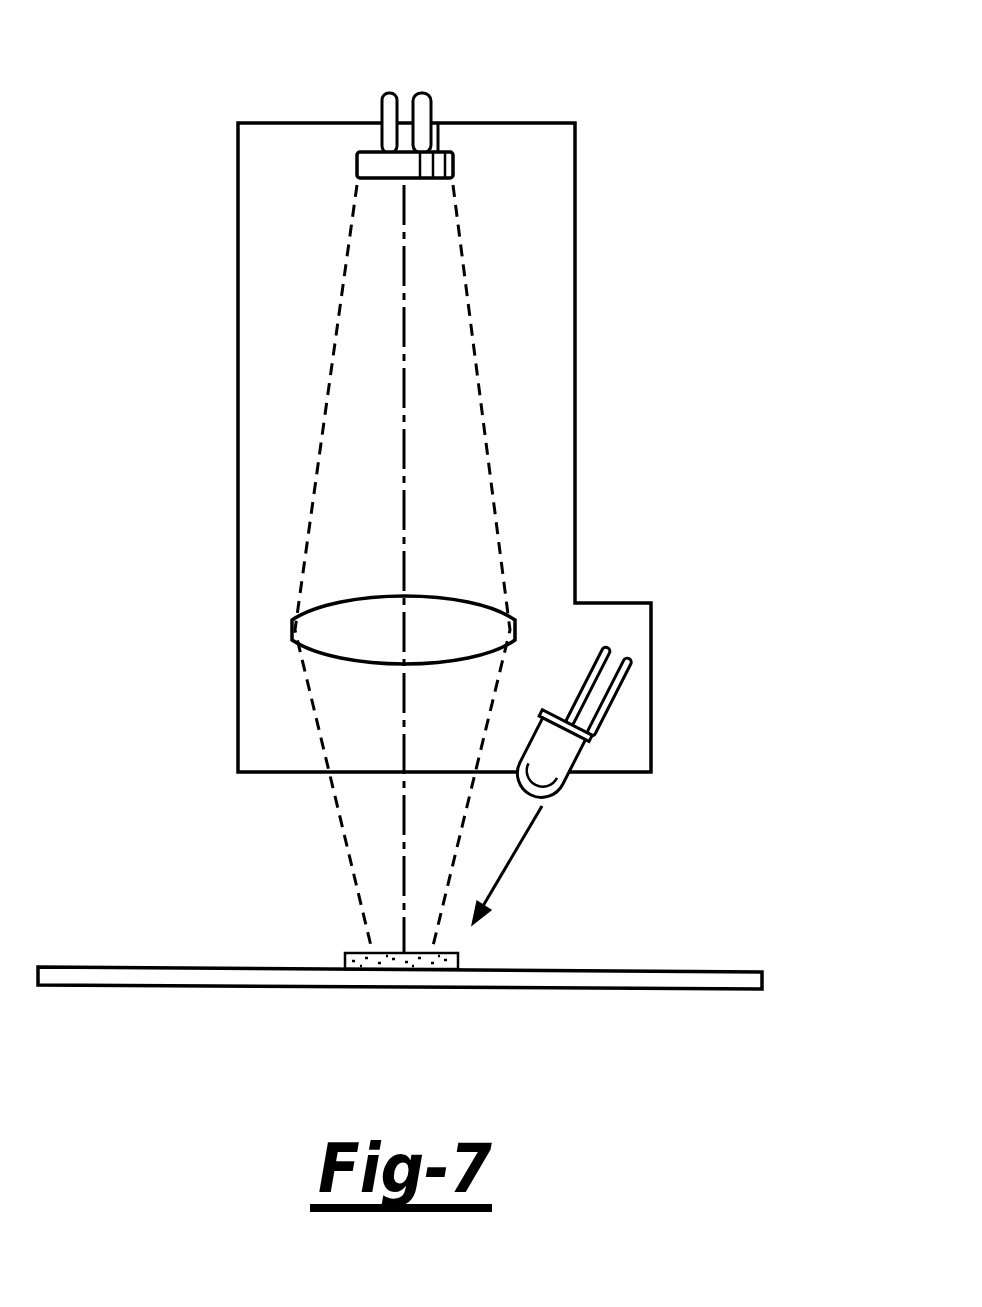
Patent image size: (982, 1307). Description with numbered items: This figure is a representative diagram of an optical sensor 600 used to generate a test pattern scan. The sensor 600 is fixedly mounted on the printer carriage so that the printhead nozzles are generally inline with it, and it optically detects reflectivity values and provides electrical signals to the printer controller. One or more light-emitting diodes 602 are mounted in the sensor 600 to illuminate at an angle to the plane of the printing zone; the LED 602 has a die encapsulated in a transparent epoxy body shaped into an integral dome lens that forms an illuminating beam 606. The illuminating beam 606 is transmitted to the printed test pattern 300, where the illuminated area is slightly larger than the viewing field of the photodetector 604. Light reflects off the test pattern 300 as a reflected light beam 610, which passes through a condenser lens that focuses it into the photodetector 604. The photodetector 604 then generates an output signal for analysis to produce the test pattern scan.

The optical sensor 600 is at (658, 314).
The photodetector 604 is at (437, 123).
The reflected light beam 610 is at (330, 378).
The light-emitting diode 602 is at (553, 762).
The illuminating beam 606 is at (507, 862).
The test pattern 300 is at (443, 967).